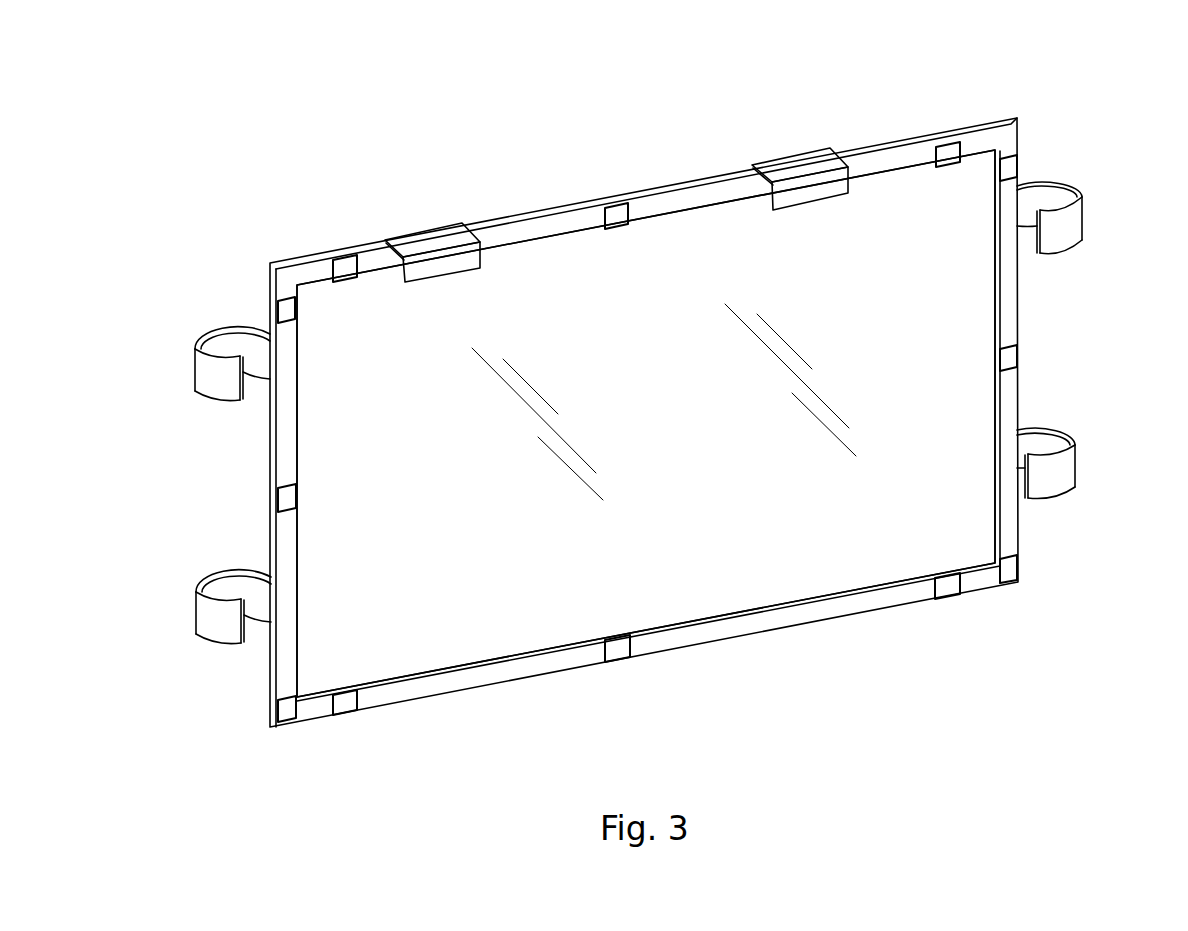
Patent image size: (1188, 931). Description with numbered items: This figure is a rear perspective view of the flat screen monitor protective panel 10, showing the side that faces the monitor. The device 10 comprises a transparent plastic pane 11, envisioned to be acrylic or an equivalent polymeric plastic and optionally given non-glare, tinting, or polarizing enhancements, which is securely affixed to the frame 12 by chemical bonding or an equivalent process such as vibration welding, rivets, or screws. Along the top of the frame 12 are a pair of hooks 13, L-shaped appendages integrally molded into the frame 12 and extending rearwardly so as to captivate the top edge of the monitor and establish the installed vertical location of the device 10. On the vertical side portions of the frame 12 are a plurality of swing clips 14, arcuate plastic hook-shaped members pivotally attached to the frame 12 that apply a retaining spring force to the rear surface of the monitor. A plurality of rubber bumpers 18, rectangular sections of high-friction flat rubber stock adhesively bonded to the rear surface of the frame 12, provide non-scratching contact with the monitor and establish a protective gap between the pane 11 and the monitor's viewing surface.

The flat screen monitor protective panel 10 is at (176, 152).
The transparent plastic pane 11 is at (498, 620).
The frame 12 is at (540, 228).
The hooks 13 is at (435, 237).
The swing clips 14 is at (203, 386).
The rubber bumpers 18 is at (613, 213).